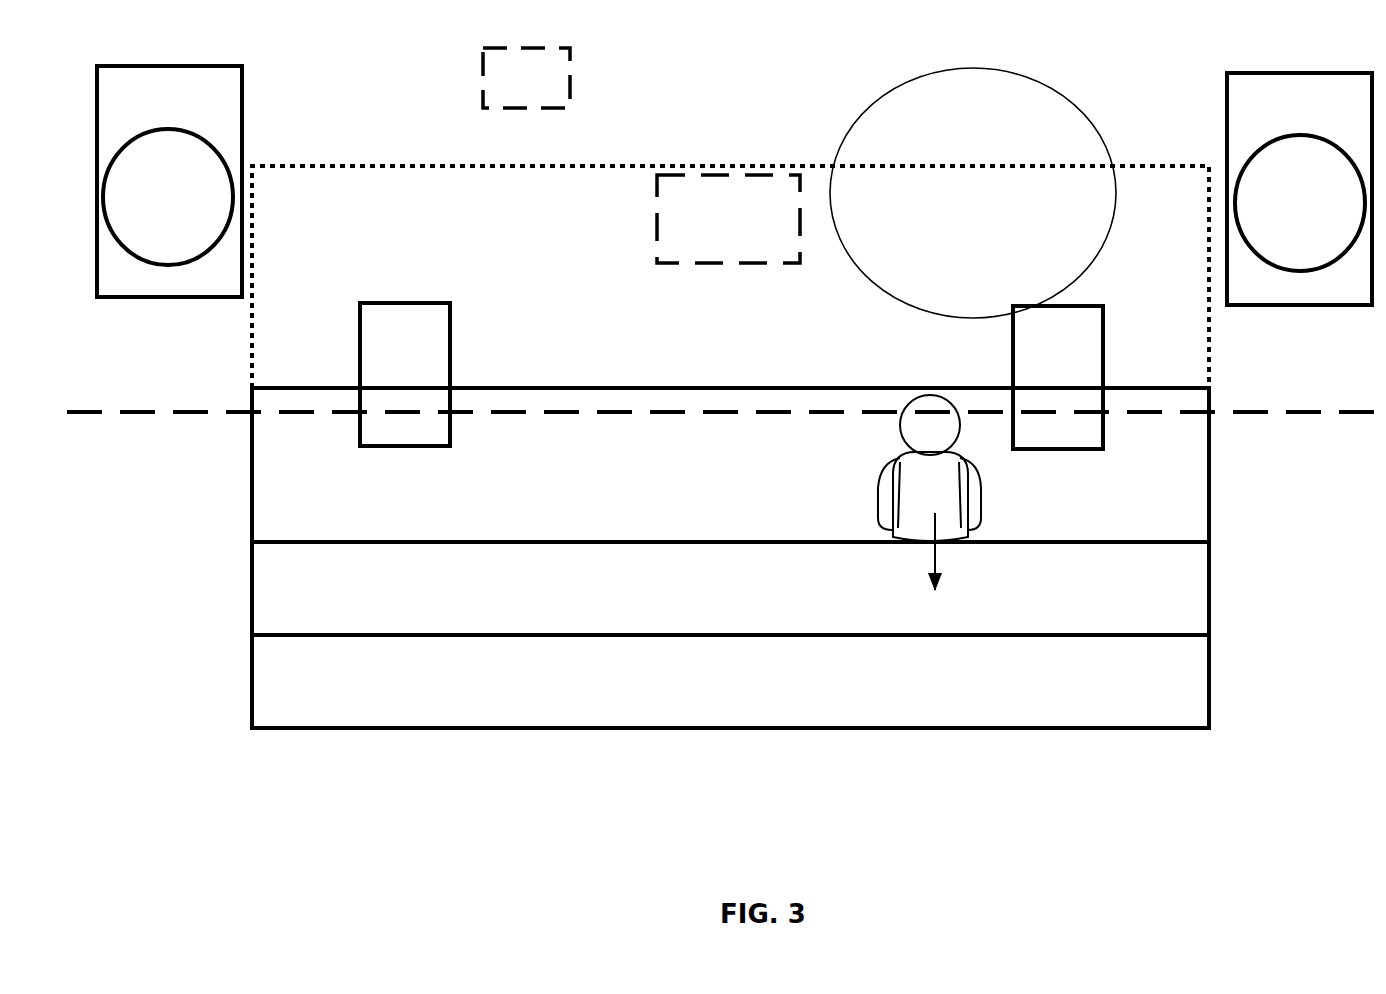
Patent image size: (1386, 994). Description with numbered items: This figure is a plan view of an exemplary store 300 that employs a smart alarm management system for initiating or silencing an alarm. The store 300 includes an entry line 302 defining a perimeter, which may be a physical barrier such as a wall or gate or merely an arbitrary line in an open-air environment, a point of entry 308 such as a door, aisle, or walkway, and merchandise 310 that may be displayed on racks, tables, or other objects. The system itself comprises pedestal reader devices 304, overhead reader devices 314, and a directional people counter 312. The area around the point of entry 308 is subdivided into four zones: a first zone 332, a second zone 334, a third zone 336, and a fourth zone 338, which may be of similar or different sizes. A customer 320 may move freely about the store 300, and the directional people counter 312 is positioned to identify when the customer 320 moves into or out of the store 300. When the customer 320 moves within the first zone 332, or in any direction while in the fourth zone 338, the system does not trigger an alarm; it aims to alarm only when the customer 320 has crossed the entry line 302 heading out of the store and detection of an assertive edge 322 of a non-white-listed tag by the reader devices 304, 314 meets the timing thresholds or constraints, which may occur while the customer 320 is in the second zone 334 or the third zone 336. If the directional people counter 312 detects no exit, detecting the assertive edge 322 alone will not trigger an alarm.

The store 300 is at (1106, 54).
The entry line 302 is at (188, 410).
The pedestal reader devices 304 is at (425, 380).
The point of entry 308 is at (578, 301).
The merchandise 310 is at (231, 115).
The directional people counter 312 is at (552, 77).
The overhead reader devices 314 is at (732, 188).
The customer 320 is at (945, 500).
The assertive edge 322 is at (932, 103).
The zone 1 332 is at (286, 337).
The zone 2 334 is at (286, 485).
The zone 3 336 is at (290, 601).
The zone 4 338 is at (291, 688).